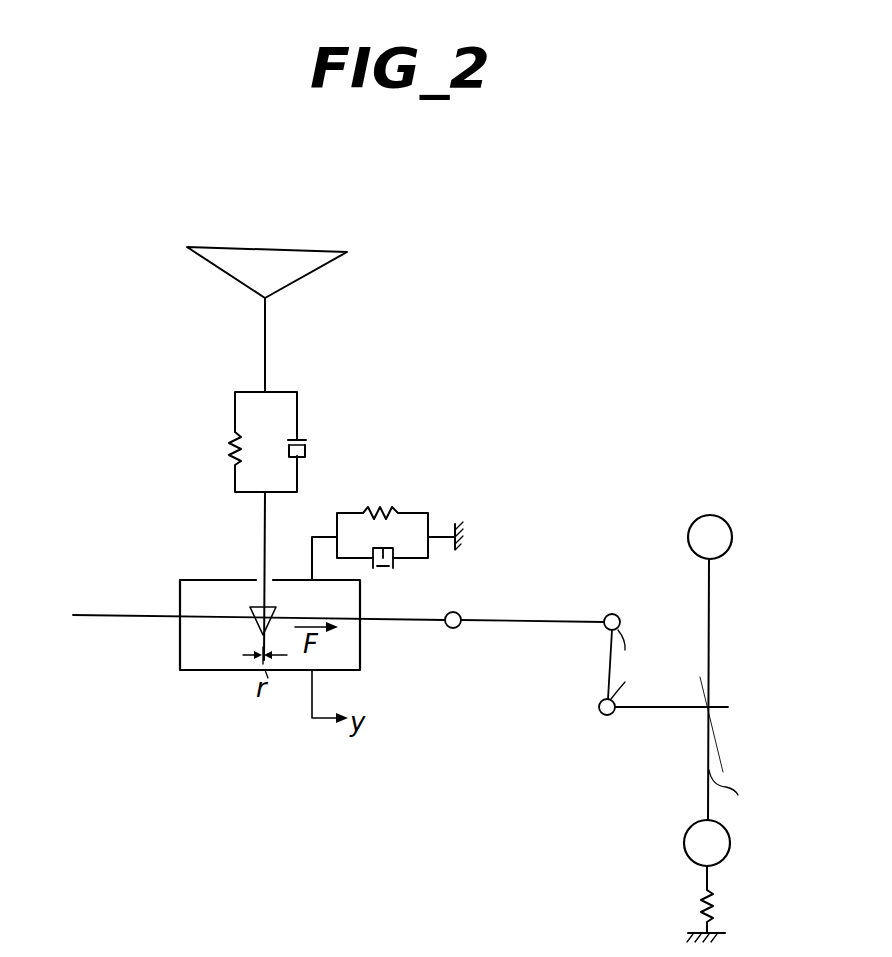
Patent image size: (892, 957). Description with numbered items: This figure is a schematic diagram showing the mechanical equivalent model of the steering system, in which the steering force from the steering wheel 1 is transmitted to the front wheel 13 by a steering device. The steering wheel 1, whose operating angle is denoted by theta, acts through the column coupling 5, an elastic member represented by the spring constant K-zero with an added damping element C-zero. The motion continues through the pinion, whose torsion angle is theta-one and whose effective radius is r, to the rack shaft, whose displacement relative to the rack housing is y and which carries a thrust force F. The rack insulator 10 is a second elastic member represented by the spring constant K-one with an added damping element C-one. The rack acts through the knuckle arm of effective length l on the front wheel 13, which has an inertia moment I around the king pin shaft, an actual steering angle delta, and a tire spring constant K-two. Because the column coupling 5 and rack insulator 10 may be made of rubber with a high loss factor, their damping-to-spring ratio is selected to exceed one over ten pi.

The steering wheel 1 is at (184, 267).
The column coupling 5 is at (188, 406).
The rack insulator 10 is at (430, 489).
The front wheel 13 is at (727, 598).